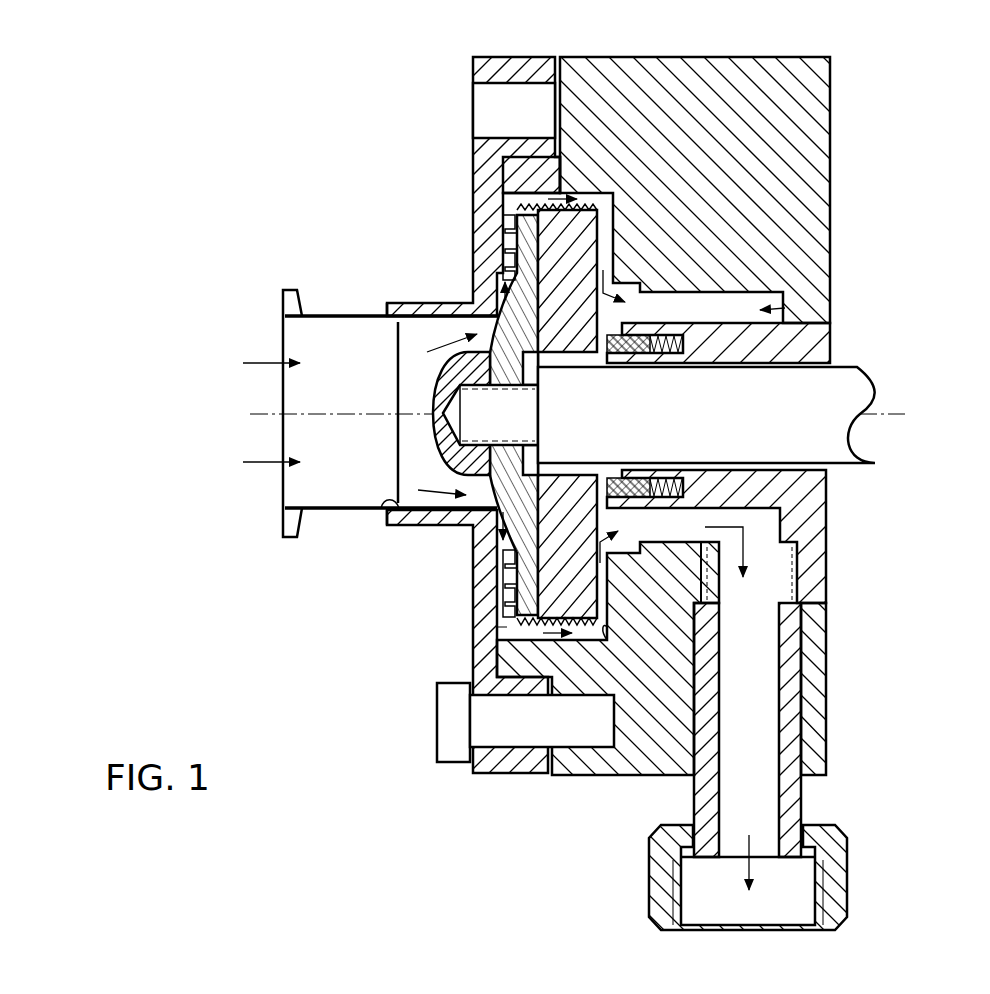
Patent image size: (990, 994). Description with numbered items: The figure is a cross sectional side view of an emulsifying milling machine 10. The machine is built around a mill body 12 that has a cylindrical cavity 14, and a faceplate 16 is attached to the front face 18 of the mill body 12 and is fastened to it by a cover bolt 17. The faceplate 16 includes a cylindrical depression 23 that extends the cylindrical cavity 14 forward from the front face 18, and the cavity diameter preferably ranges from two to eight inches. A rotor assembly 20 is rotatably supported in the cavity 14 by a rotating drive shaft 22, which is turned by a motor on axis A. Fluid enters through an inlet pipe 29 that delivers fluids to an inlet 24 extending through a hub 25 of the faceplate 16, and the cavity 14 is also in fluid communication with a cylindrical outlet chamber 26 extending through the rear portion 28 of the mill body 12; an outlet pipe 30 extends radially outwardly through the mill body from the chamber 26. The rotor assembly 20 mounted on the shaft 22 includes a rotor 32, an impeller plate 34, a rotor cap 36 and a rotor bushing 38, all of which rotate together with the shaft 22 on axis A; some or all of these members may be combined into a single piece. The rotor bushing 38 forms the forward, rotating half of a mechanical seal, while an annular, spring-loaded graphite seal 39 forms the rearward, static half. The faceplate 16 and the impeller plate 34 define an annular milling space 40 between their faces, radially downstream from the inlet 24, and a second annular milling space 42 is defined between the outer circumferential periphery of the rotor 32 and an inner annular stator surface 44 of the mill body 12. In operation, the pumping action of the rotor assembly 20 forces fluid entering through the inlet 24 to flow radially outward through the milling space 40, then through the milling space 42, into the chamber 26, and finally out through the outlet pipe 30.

The emulsifying milling machine 10 is at (214, 279).
The mill body 12 is at (810, 173).
The cylindrical cavity 14 is at (598, 196).
The faceplate 16 is at (470, 187).
The cover bolt 17 is at (448, 733).
The front face 18 is at (472, 160).
The rotor assembly 20 is at (597, 384).
The drive shaft 22 is at (863, 396).
The cylindrical depression 23 is at (555, 175).
The inlet 24 is at (436, 475).
The hub 25 is at (390, 498).
The cylindrical outlet chamber 26 is at (832, 305).
The rear portion 28 is at (838, 488).
The inlet pipe 29 is at (278, 517).
The outlet pipe 30 is at (797, 802).
The rotor 32 is at (567, 495).
The impeller plate 34 is at (500, 593).
The rotor cap 36 is at (437, 392).
The rotor bushing 38 is at (625, 318).
The graphite seal 39 is at (633, 494).
The annular milling space 40 is at (494, 247).
The second annular milling space 42 is at (513, 640).
The inner annular stator surface 44 is at (607, 628).
The axis A is at (250, 420).